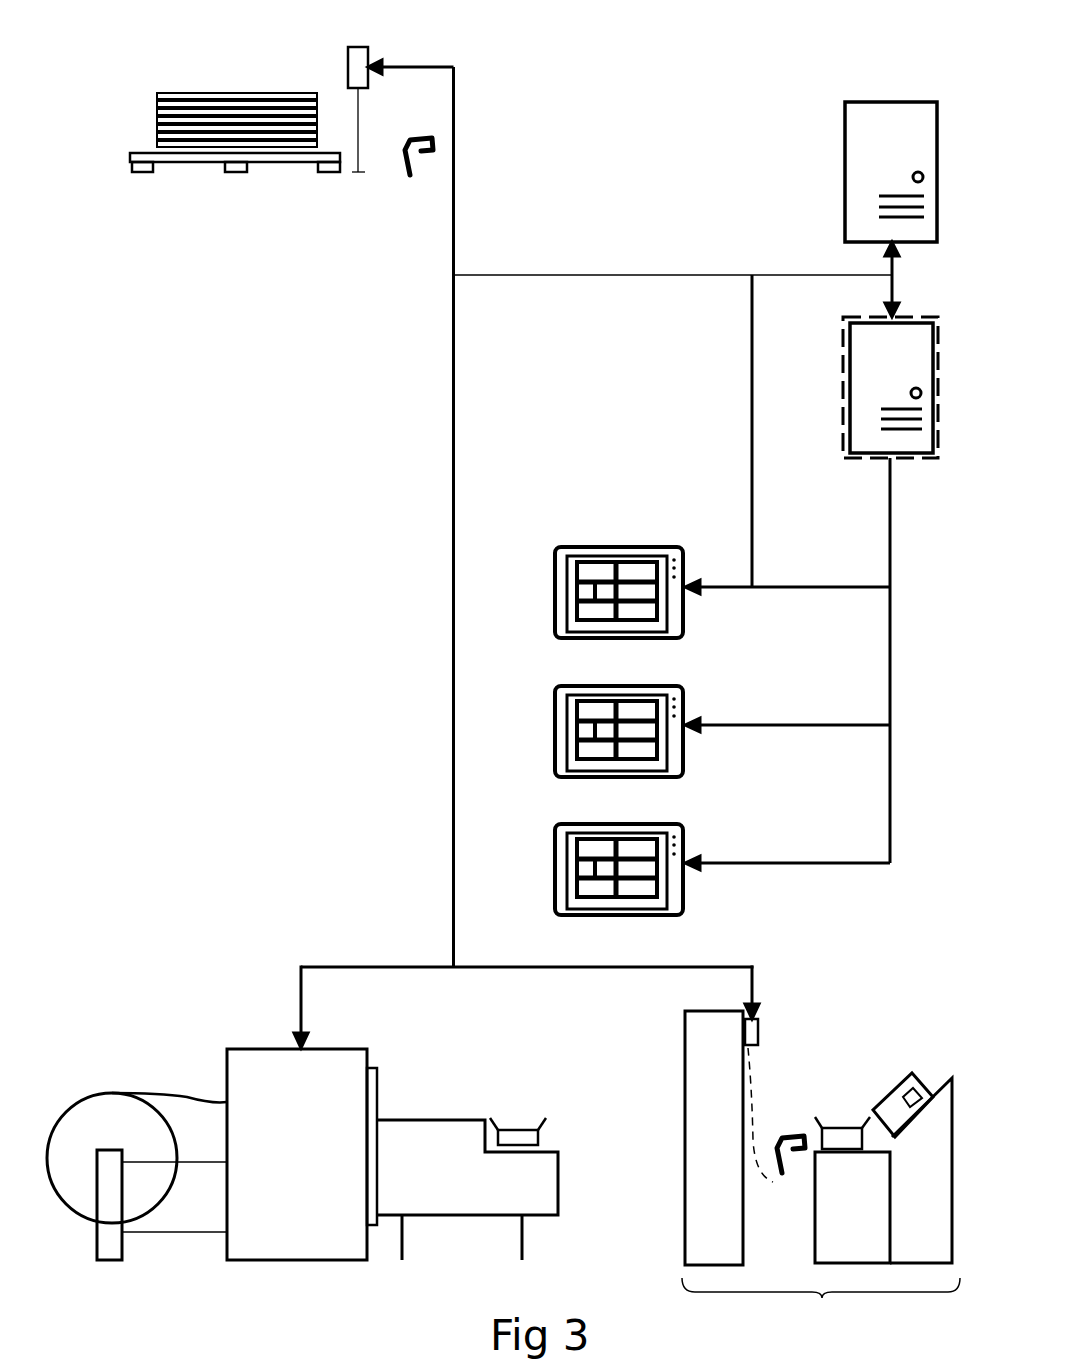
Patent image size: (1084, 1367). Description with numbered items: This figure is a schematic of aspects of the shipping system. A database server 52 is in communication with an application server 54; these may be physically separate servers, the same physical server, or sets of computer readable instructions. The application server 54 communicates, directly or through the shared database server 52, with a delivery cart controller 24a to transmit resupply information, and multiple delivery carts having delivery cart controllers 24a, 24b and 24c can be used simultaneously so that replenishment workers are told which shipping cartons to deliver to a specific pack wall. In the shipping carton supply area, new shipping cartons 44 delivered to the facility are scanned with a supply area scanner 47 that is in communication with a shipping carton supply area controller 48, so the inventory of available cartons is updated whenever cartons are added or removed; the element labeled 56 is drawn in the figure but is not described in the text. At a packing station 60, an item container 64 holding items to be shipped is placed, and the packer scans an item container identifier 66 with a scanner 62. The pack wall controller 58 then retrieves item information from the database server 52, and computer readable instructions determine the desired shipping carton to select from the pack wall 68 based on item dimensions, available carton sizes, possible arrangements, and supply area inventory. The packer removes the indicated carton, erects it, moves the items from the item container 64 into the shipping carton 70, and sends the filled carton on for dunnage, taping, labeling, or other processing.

The shipping cartons 44 is at (80, 114).
The supply area scanner 47 is at (405, 137).
The shipping carton supply area controller 48 is at (365, 47).
The database server 52 is at (845, 172).
The application server 54 is at (847, 397).
The delivery cart controller 24a is at (552, 593).
The delivery cart controller 24b is at (552, 732).
The delivery cart controller 24c is at (552, 870).
The printing machine 56 is at (225, 1073).
The pack wall controller 58 is at (752, 1048).
The packing station 60 is at (821, 1202).
The scanner 62 is at (778, 1135).
The item container 64 is at (903, 1082).
The item container identifier 66 is at (903, 1105).
The pack wall 68 is at (685, 1080).
The shipping carton 70 is at (520, 1129).